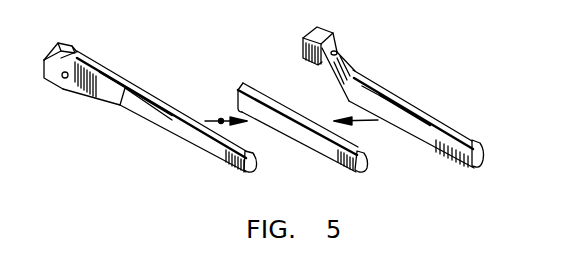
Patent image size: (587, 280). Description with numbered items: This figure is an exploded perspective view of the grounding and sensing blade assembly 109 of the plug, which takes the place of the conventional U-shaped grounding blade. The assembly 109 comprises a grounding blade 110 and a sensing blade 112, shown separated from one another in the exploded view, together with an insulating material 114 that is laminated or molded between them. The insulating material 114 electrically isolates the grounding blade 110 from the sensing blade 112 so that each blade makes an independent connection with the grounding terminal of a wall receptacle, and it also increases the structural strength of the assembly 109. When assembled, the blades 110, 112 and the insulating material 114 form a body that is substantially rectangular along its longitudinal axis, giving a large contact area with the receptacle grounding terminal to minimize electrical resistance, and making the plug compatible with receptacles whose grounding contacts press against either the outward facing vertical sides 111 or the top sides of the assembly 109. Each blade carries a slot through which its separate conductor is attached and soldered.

The grounding and sensing blade assembly 109 is at (410, 92).
The grounding blade 110 is at (484, 158).
The outward facing vertical sides 111 is at (148, 113).
The sensing blade 112 is at (258, 165).
The insulating material 114 is at (367, 162).